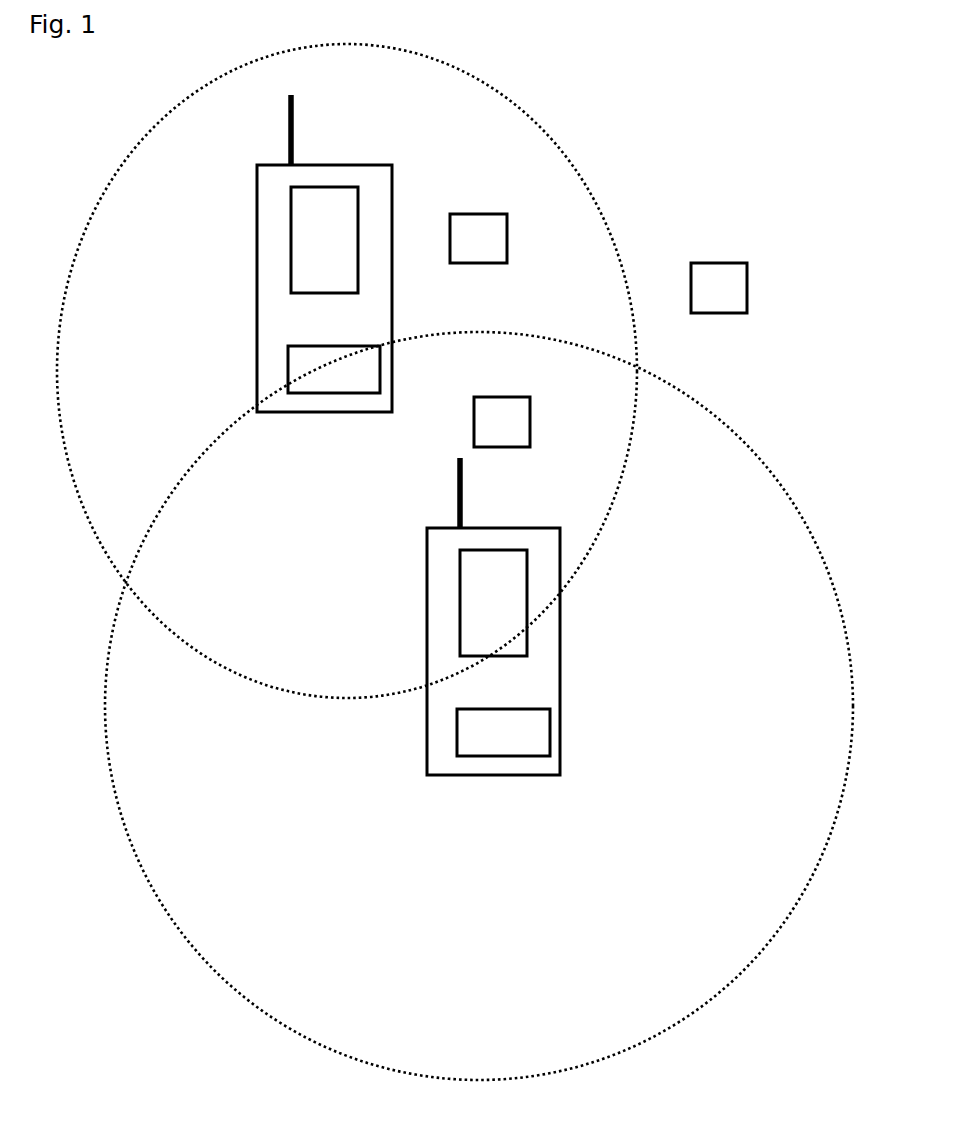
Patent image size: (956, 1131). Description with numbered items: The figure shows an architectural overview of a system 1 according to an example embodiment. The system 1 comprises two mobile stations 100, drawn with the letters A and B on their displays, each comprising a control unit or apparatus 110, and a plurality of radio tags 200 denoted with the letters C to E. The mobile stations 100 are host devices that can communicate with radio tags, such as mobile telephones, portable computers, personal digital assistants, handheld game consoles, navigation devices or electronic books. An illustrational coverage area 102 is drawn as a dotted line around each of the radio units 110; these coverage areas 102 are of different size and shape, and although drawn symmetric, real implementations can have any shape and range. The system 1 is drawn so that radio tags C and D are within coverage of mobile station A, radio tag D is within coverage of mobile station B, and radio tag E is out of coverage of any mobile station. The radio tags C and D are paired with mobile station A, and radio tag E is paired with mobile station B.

The system 1 is at (72, 144).
The mobile station 100 is at (341, 163).
The coverage area 102 is at (77, 482).
The control unit 110 is at (380, 368).
The radio tag 200 is at (507, 222).